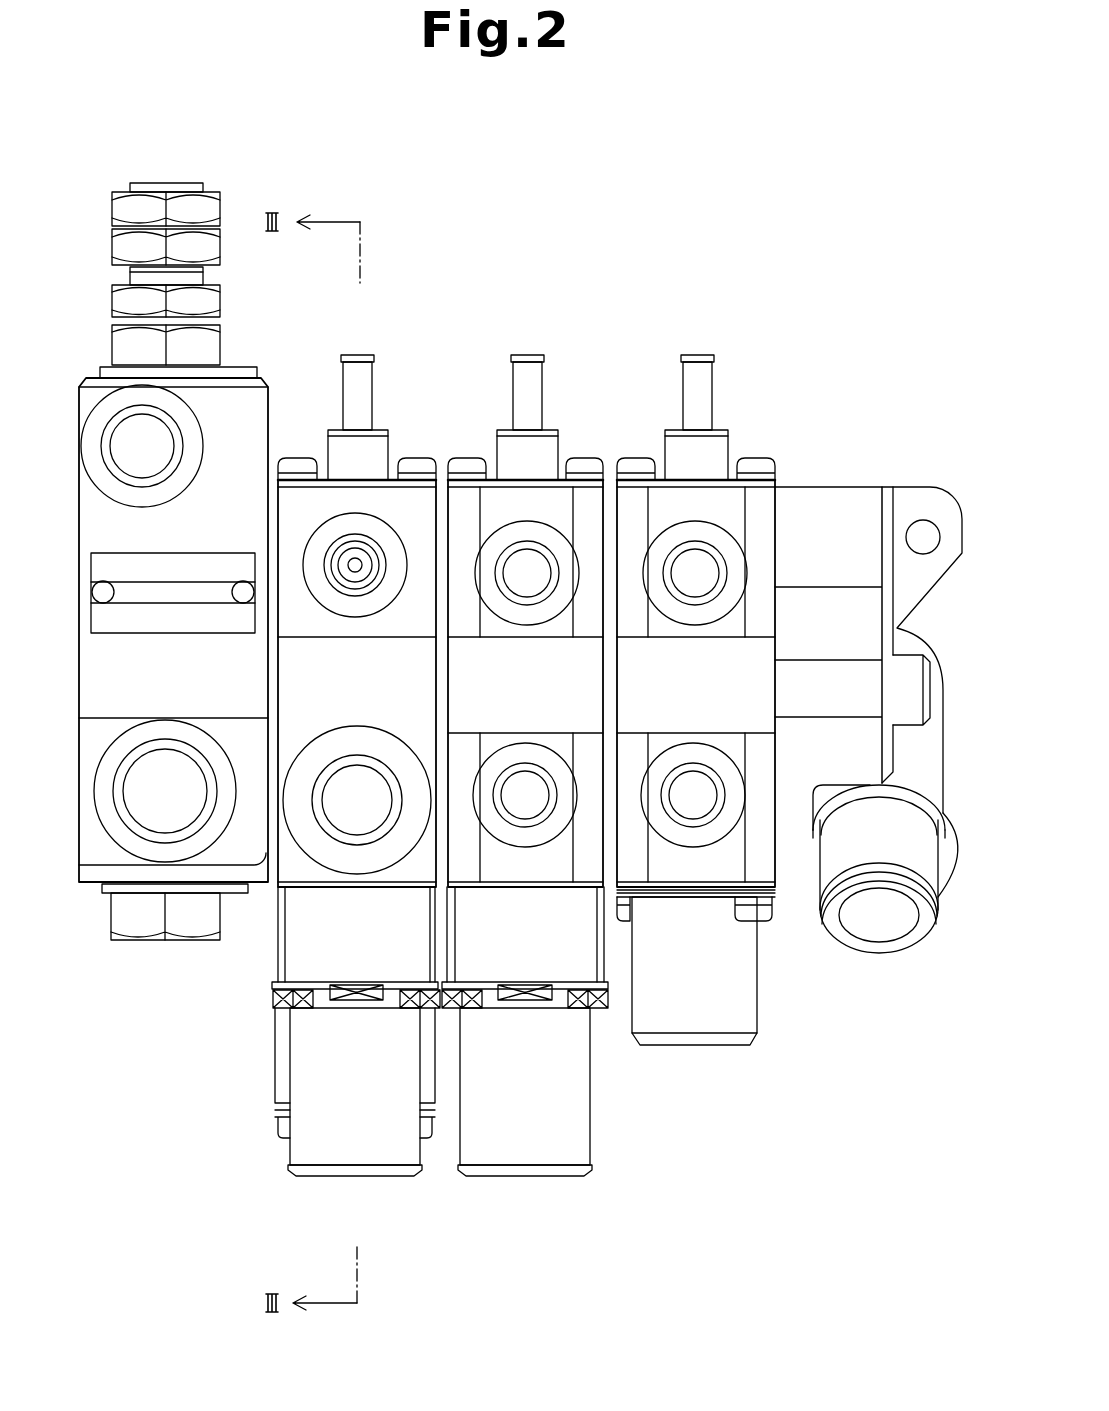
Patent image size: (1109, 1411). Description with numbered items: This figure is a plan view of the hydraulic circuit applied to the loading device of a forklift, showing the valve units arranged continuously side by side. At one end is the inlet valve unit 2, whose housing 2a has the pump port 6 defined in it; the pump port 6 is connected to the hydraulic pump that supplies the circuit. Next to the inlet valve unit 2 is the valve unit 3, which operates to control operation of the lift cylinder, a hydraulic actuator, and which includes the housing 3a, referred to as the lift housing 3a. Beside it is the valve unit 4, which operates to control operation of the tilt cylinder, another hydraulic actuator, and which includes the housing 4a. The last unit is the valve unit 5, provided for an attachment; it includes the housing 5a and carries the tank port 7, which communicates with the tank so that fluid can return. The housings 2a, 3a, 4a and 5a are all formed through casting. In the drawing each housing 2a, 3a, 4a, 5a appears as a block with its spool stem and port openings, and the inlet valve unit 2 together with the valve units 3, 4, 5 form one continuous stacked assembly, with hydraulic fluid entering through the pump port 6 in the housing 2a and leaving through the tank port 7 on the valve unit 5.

The inlet valve unit 2 is at (169, 589).
The housing 2a is at (90, 855).
The valve unit 3 is at (312, 765).
The housing 3a is at (287, 873).
The valve unit 4 is at (507, 765).
The housing 4a is at (465, 493).
The valve unit 5 is at (735, 700).
The housing 5a is at (758, 497).
The pump port 6 is at (137, 780).
The tank port 7 is at (880, 923).